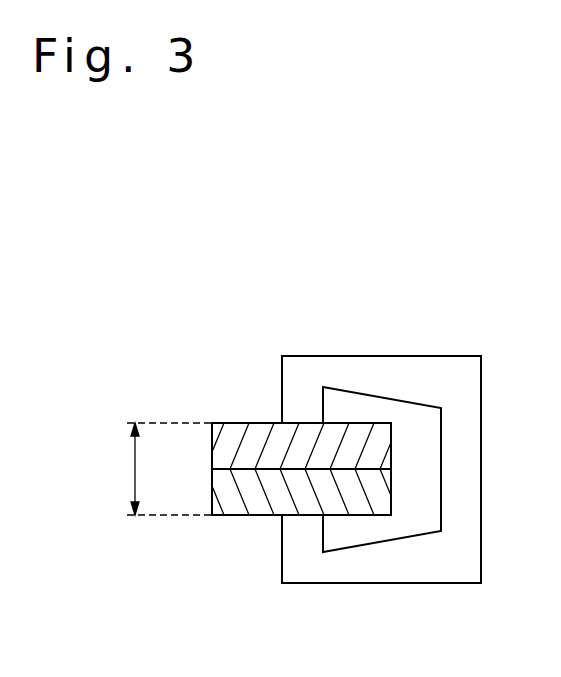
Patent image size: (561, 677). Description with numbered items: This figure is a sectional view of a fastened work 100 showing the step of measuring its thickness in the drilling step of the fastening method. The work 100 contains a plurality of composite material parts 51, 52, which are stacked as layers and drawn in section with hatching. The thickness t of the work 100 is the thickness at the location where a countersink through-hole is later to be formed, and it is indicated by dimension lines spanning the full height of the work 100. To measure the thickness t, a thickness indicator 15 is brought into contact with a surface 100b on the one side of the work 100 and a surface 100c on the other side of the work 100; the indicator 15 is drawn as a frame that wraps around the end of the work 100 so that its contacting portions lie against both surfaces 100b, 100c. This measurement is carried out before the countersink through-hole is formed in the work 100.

The thickness indicator 15 is at (388, 356).
The work 100 is at (273, 450).
The composite material part 51 is at (212, 446).
The composite material part 52 is at (212, 493).
The surface on the one side of the work 100b is at (246, 423).
The surface on the other side of the work 100c is at (245, 515).
The thickness t is at (166, 469).